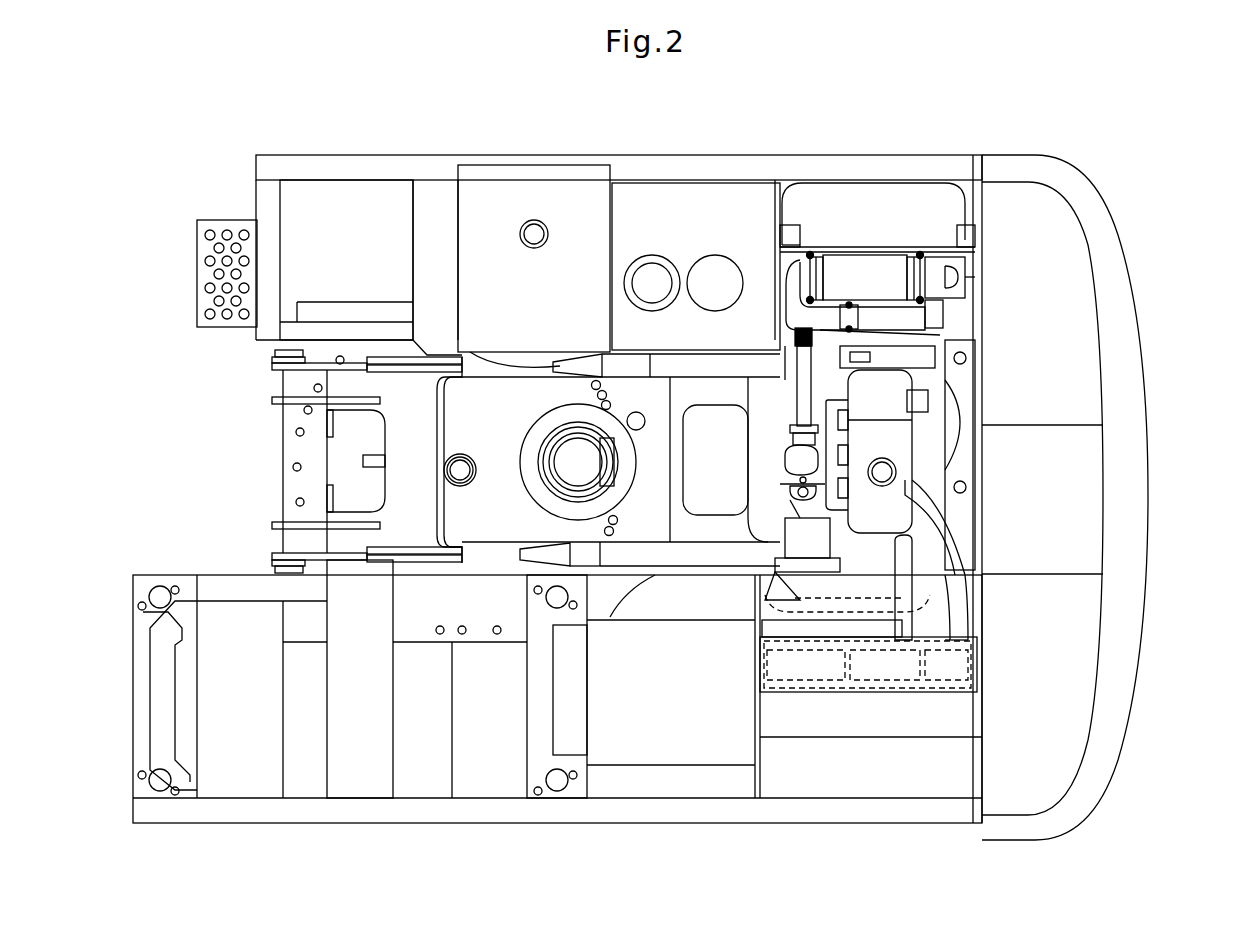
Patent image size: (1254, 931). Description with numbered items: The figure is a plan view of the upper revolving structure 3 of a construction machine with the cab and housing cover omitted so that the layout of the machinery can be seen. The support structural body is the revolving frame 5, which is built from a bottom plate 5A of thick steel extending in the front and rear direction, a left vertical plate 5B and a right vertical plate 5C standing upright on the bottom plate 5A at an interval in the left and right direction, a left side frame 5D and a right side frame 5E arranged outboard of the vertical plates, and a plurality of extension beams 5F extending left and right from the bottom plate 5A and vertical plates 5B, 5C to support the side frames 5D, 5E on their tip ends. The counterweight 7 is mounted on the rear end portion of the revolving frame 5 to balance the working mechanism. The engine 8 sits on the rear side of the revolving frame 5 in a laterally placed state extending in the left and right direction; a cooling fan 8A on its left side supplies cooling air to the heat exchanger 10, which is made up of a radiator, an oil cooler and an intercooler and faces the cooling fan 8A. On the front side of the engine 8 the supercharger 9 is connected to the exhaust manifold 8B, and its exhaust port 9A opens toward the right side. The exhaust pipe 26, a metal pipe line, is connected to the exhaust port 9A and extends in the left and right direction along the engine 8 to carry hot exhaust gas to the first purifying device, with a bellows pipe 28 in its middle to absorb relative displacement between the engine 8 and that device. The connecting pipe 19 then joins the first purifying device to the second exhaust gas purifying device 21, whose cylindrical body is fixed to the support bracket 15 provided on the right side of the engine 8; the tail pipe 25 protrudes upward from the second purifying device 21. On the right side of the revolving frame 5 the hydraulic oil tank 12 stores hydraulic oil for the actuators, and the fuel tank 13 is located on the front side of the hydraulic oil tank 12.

The upper revolving structure 3 is at (586, 155).
The revolving frame 5 is at (497, 813).
The bottom plate 5A is at (318, 452).
The left vertical plate 5B is at (365, 548).
The right vertical plate 5C is at (365, 370).
The left side frame 5D is at (627, 813).
The right side frame 5E is at (334, 170).
The extension beam 5F is at (432, 195).
The counterweight 7 is at (1105, 690).
The engine 8 is at (880, 448).
The cooling fan 8A is at (770, 612).
The exhaust manifold 8B is at (812, 500).
The supercharger 9 is at (800, 452).
The exhaust port 9A is at (800, 430).
The heat exchanger 10 is at (875, 665).
The hydraulic oil tank 12 is at (662, 215).
The fuel tank 13 is at (516, 180).
The support bracket 15 is at (932, 260).
The connecting pipe 19 is at (890, 313).
The second exhaust gas purifying device 21 is at (853, 280).
The tail pipe 25 is at (955, 276).
The exhaust pipe 26 is at (805, 388).
The bellows pipe 28 is at (790, 330).